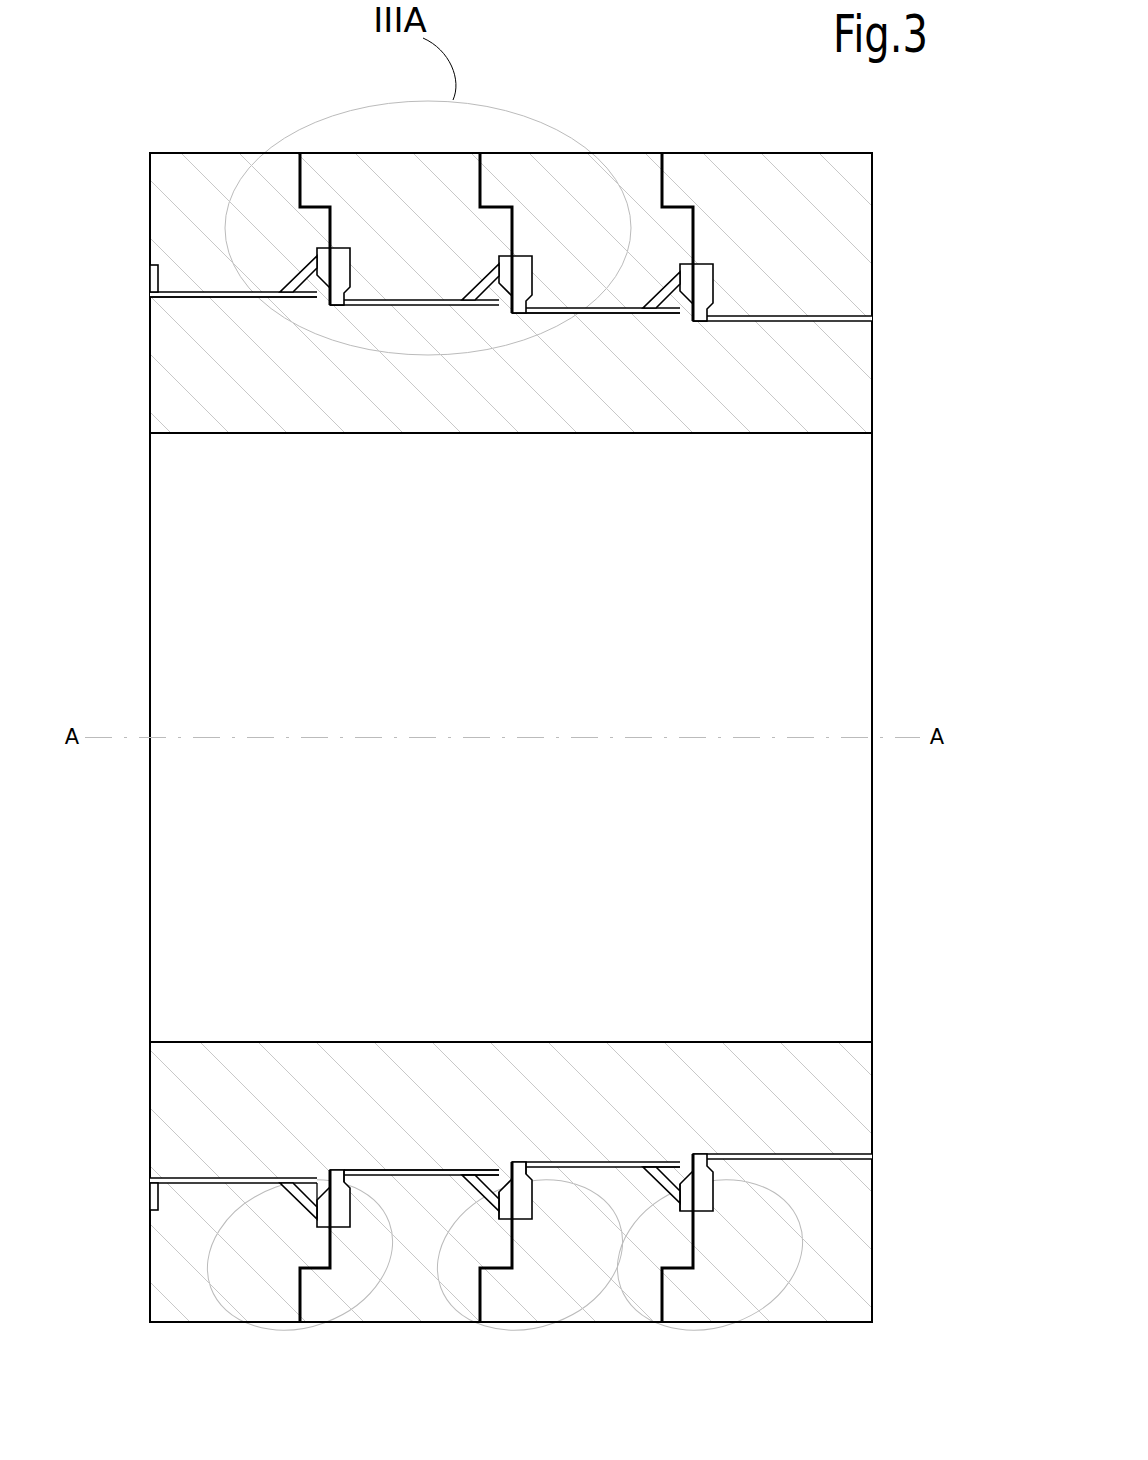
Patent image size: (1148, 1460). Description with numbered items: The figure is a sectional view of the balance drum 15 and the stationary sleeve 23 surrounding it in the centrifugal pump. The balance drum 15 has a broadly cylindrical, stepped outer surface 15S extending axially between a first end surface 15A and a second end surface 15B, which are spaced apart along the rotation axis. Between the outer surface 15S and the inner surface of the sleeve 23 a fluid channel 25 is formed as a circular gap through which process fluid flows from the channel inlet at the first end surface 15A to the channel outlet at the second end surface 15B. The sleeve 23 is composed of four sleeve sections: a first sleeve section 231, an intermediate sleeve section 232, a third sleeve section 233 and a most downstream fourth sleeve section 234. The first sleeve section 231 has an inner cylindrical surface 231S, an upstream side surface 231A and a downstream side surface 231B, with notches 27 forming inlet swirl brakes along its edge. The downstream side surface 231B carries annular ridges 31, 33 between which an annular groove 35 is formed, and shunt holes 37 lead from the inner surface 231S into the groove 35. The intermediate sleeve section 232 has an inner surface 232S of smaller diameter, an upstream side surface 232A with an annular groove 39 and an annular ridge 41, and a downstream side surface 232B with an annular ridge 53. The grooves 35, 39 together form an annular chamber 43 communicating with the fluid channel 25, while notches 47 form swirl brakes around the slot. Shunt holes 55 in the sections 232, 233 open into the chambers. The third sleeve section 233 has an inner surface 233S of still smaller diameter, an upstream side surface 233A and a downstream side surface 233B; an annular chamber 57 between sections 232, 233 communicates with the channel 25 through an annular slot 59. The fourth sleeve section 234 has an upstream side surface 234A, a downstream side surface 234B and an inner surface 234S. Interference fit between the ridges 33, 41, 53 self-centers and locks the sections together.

The balance drum 15 is at (620, 433).
The first end surface 15A is at (150, 402).
The second end surface 15B is at (872, 395).
The outer surface 15S is at (785, 320).
The sleeve 23 is at (915, 180).
The fluid channel 25 is at (620, 320).
The notches 27 is at (150, 273).
The annular ridge 31 is at (350, 288).
The annular ridge 33 is at (333, 228).
The annular groove 35 is at (336, 272).
The shunt holes 37 is at (312, 1190).
The annular groove 39 is at (343, 1195).
The annular ridge 41 is at (308, 200).
The annular chamber 43 is at (345, 1230).
The notches 47 is at (335, 302).
The annular ridge 53 is at (505, 1240).
The shunt holes 55 is at (448, 1190).
The annular chamber 57 is at (548, 1215).
The annular slot 59 is at (518, 1185).
The first sleeve section 231 is at (213, 148).
The upstream side surface 231A is at (150, 195).
The downstream side surface 231B is at (332, 160).
The inner cylindrical surface 231S is at (225, 297).
The intermediate sleeve section 232 is at (407, 140).
The upstream side surface 232A is at (322, 1245).
The downstream side surface 232B is at (535, 1245).
The inner surface 232S is at (405, 1172).
The third sleeve section 233 is at (543, 148).
The upstream side surface 233A is at (462, 190).
The downstream side surface 233B is at (668, 185).
The inner surface 233S is at (620, 315).
The fourth sleeve section 234 is at (790, 140).
The upstream side surface 234A is at (680, 1250).
The downstream side surface 234B is at (875, 1240).
The inner surface 234S is at (795, 1157).